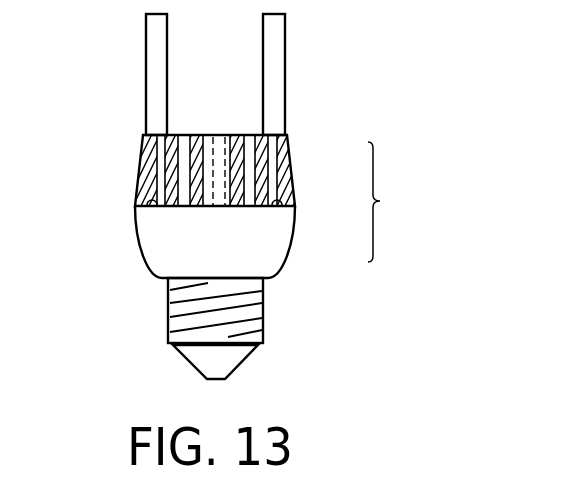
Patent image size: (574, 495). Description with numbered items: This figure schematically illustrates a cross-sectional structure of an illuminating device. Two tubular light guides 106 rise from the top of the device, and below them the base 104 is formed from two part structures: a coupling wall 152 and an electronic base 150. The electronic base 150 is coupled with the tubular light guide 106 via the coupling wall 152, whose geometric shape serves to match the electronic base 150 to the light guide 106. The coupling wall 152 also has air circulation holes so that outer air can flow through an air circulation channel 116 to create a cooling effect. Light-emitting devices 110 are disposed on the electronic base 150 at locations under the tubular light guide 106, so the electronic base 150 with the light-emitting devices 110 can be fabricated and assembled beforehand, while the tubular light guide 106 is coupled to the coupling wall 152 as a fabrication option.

The tubular light guide 106 is at (278, 78).
The coupling wall 152 is at (288, 183).
The electronic base 150 is at (296, 228).
The base 104 is at (392, 202).
The light-emitting devices 110 is at (137, 204).
The air circulation channel 116 is at (262, 296).